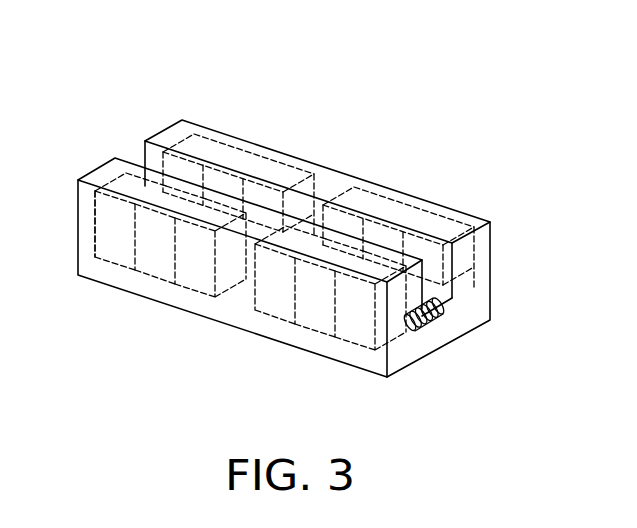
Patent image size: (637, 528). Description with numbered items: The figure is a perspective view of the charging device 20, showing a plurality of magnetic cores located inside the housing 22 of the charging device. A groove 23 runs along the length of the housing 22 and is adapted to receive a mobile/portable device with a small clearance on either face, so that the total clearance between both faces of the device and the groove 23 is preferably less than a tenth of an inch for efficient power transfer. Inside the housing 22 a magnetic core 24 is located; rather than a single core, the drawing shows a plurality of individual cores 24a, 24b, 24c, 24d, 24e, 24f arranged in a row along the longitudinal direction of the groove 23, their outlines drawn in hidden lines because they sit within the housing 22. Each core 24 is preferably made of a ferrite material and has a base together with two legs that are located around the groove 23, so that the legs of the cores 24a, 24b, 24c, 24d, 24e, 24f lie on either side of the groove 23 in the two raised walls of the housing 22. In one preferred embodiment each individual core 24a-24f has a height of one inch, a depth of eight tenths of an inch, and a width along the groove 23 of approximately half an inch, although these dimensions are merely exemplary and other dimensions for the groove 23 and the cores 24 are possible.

The charging device 20 is at (251, 224).
The housing 22 is at (328, 182).
The groove 23 is at (135, 152).
The magnetic core 24 is at (95, 226).
The magnetic core 24a is at (112, 277).
The magnetic core 24b is at (153, 279).
The magnetic core 24c is at (194, 292).
The magnetic core 24d is at (268, 313).
The magnetic core 24e is at (317, 334).
The magnetic core 24f is at (358, 345).